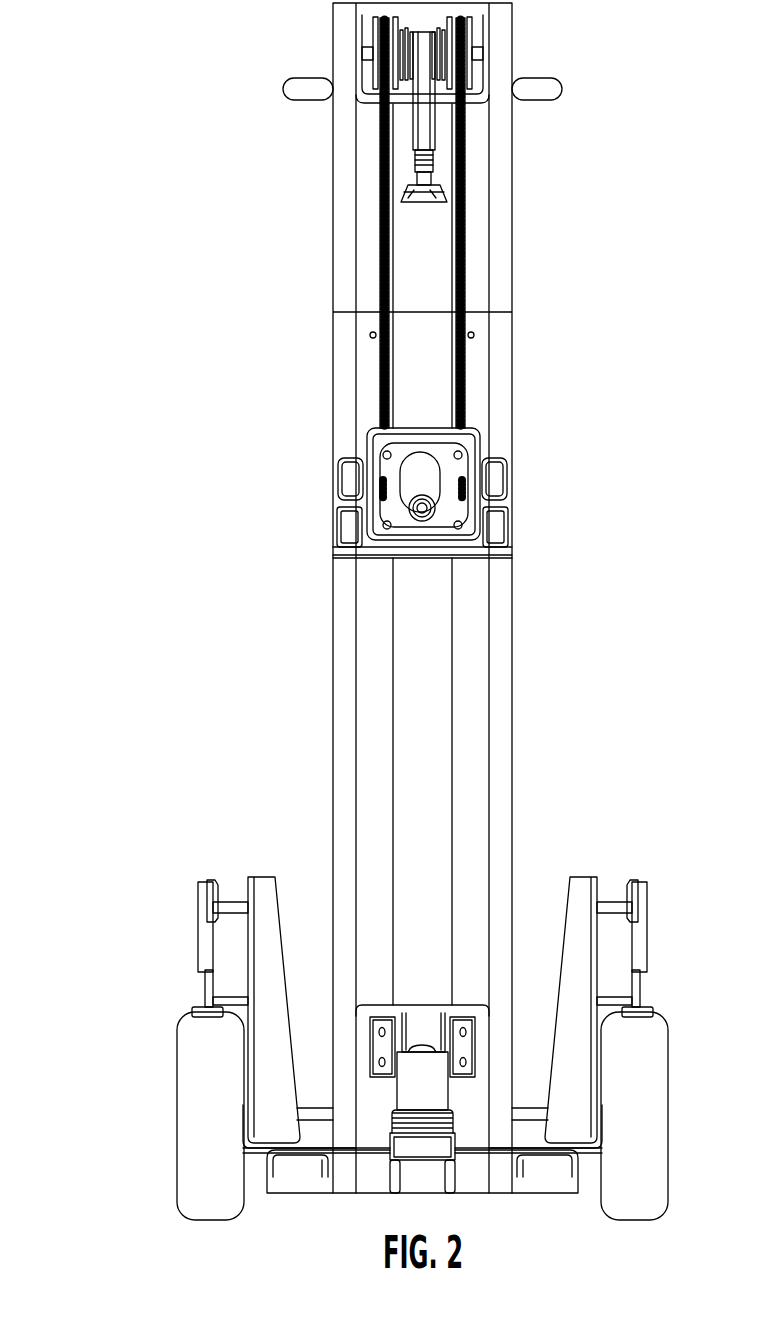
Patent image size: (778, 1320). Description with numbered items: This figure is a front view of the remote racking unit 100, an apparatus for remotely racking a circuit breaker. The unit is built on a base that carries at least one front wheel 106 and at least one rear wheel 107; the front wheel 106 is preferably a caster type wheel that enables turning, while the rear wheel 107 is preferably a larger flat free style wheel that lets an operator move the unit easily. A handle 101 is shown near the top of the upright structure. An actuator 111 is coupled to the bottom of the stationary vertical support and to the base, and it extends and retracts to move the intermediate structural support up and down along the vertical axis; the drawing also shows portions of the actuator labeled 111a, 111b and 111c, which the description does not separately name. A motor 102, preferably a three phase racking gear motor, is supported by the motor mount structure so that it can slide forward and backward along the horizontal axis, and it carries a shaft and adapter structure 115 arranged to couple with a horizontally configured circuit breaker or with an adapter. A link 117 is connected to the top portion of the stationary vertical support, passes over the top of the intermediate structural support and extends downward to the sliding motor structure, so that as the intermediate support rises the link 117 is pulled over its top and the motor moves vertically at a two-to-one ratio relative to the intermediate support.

The remote racking unit 100 is at (122, 177).
The handle 101 is at (299, 90).
The motor 102 is at (452, 470).
The front wheel 106 is at (394, 1181).
The rear wheel 107 is at (193, 1044).
The actuator 111 is at (424, 1084).
The lower slider 111a is at (437, 1060).
The nut 111b is at (455, 198).
The central shaft 111c is at (434, 174).
The shaft and adapter structure 115 is at (436, 512).
The link 117 is at (385, 277).